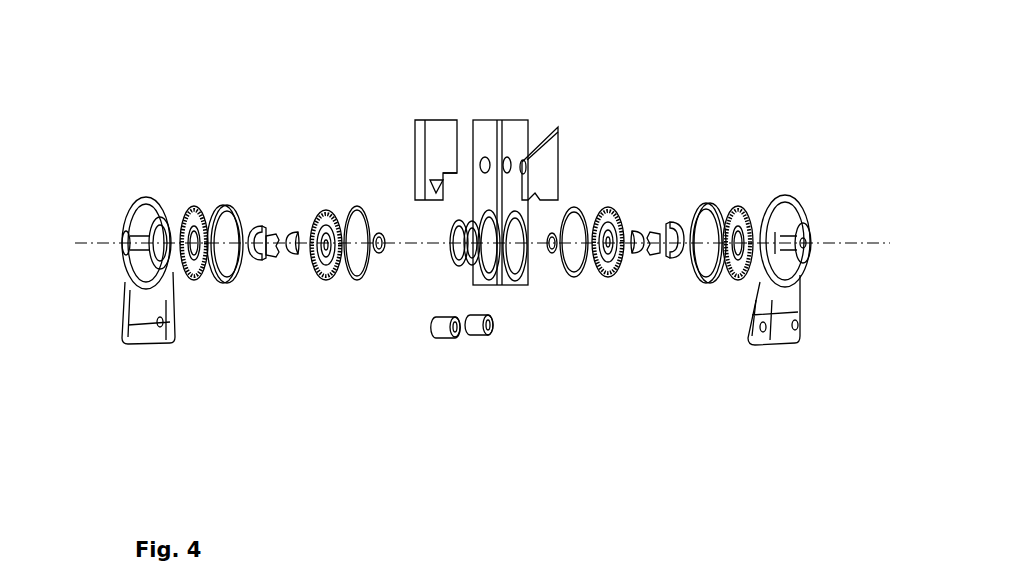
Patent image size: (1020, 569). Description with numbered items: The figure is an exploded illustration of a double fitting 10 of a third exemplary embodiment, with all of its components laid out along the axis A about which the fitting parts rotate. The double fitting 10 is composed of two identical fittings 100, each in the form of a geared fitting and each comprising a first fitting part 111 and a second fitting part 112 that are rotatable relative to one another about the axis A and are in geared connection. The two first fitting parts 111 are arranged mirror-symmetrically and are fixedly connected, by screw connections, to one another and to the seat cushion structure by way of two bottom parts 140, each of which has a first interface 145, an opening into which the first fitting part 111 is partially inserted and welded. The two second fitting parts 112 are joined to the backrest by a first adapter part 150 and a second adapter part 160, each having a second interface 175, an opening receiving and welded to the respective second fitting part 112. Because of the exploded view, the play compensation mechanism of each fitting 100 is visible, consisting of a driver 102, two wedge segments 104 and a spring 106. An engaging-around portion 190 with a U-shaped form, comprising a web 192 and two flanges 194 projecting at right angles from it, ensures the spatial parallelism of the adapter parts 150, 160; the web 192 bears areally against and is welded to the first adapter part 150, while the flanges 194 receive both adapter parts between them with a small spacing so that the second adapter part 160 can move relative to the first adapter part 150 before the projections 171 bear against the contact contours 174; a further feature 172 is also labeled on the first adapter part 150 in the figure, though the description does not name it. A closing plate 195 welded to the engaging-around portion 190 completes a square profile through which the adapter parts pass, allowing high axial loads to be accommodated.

The double fitting 10 is at (290, 92).
The fitting 100 is at (185, 158).
The driver 102 is at (267, 257).
The wedge segments 104 is at (290, 250).
The spring 106 is at (247, 225).
The first fitting part 111 is at (188, 210).
The second fitting part 112 is at (324, 264).
The bottom part 140 is at (147, 332).
The first interface 145 is at (145, 216).
The first adapter part 150 is at (484, 153).
The second adapter part 160 is at (525, 162).
The projections 171 is at (484, 160).
The opening 172 is at (501, 170).
The contact contours 174 is at (584, 126).
The second interface 175 is at (490, 258).
The engaging-around portion 190 is at (391, 119).
The web 192 is at (433, 138).
The flanges 194 is at (453, 135).
The closing plate 195 is at (557, 162).
The axis A is at (848, 243).